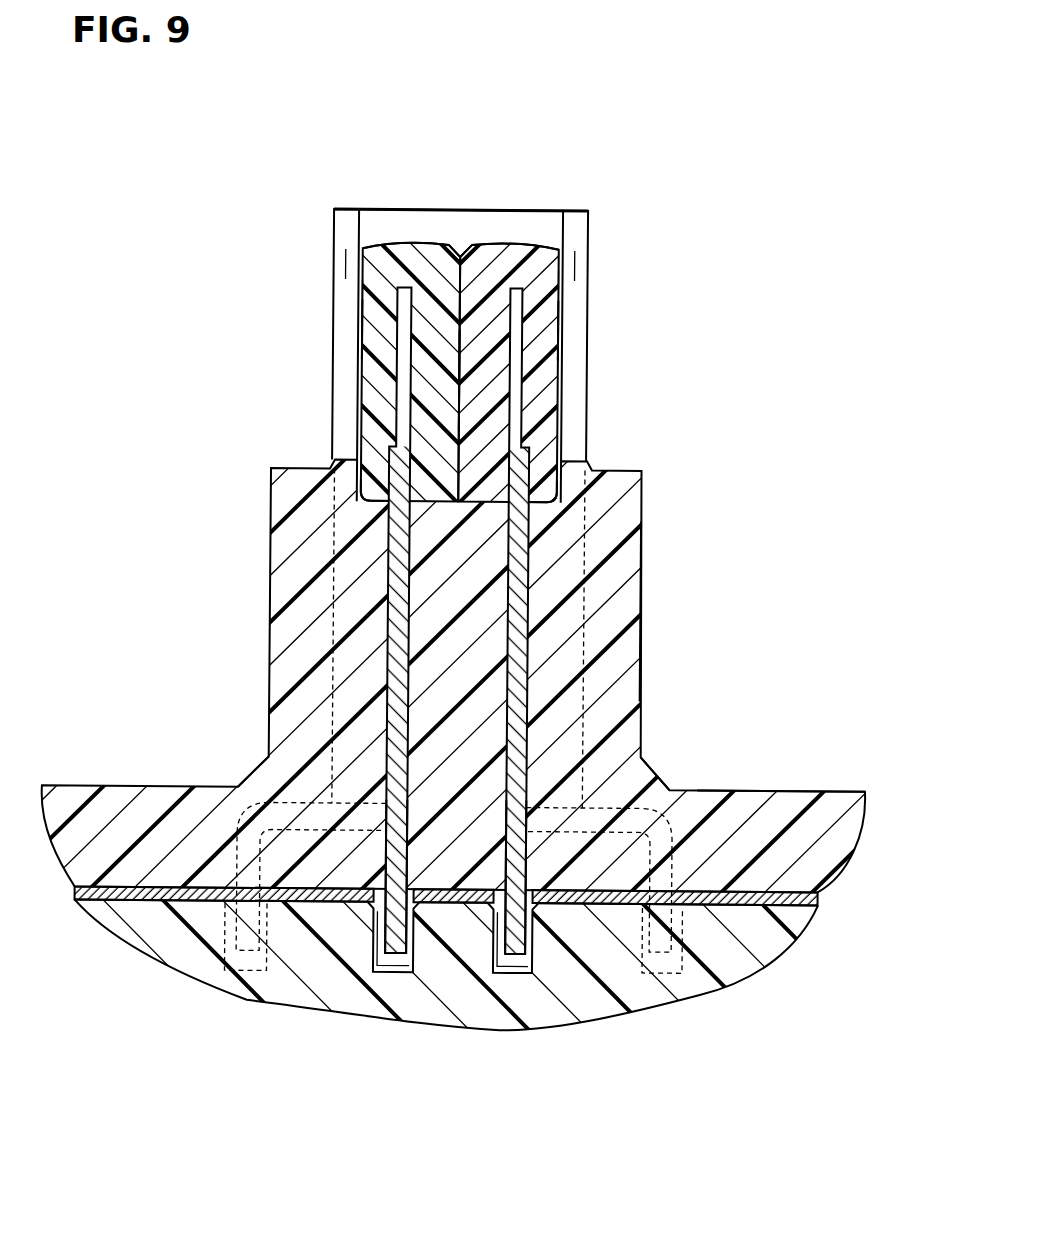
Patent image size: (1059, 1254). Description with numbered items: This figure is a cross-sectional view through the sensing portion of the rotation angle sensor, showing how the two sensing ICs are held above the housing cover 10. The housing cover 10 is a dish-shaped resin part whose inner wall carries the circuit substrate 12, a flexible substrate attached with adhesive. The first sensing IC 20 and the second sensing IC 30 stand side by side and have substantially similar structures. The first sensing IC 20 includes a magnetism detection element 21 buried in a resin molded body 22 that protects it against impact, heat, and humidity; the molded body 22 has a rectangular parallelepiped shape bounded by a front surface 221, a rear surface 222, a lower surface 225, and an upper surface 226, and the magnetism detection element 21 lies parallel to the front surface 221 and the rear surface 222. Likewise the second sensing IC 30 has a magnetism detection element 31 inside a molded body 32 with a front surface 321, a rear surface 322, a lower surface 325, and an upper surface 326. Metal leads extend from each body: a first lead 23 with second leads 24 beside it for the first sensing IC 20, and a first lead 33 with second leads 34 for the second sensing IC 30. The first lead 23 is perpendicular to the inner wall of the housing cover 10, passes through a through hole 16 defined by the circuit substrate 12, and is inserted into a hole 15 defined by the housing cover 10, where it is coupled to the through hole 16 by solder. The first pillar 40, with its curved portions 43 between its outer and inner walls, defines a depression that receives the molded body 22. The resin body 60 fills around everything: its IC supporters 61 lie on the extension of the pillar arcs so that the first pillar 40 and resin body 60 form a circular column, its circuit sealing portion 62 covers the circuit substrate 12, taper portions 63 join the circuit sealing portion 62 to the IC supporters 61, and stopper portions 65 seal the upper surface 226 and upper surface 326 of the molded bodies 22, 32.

The housing cover 10 is at (741, 945).
The circuit substrate 12 is at (775, 891).
The hole 15 is at (252, 972).
The through hole 16 is at (409, 970).
The first sensing IC 20 is at (400, 257).
The magnetism detection element 21 is at (403, 366).
The molded body 22 is at (378, 289).
The first lead 23 is at (380, 857).
The second lead 24 is at (347, 801).
The second sensing IC 30 is at (525, 267).
The magnetism detection element 31 is at (524, 401).
The molded body 32 is at (553, 278).
The first lead 33 is at (532, 852).
The second lead 34 is at (587, 799).
The first pillar 40 is at (587, 224).
The curved portion 43 is at (344, 296).
The resin body 60 is at (291, 584).
The IC supporter 61 is at (625, 604).
The circuit sealing portion 62 is at (771, 816).
The taper portion 63 is at (254, 773).
The stopper portion 65 is at (458, 232).
The front surface 221 is at (358, 331).
The rear surface 222 is at (462, 410).
The lower surface 225 is at (366, 501).
The upper surface 226 is at (431, 247).
The front surface 321 is at (548, 333).
The rear surface 322 is at (454, 362).
The lower surface 325 is at (554, 500).
The upper surface 326 is at (490, 246).